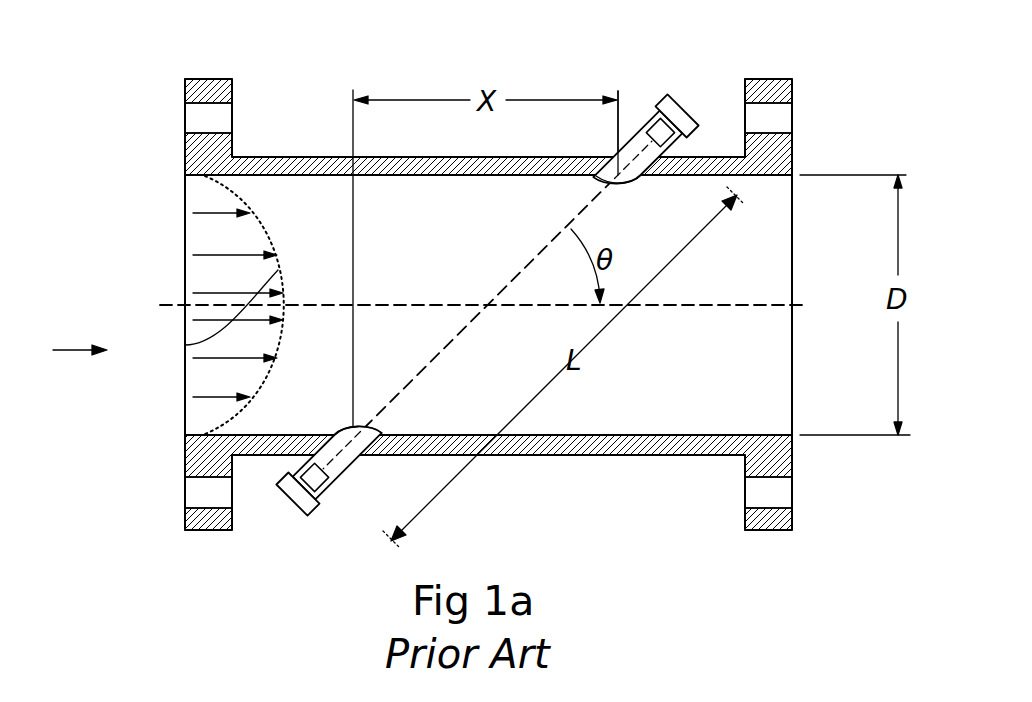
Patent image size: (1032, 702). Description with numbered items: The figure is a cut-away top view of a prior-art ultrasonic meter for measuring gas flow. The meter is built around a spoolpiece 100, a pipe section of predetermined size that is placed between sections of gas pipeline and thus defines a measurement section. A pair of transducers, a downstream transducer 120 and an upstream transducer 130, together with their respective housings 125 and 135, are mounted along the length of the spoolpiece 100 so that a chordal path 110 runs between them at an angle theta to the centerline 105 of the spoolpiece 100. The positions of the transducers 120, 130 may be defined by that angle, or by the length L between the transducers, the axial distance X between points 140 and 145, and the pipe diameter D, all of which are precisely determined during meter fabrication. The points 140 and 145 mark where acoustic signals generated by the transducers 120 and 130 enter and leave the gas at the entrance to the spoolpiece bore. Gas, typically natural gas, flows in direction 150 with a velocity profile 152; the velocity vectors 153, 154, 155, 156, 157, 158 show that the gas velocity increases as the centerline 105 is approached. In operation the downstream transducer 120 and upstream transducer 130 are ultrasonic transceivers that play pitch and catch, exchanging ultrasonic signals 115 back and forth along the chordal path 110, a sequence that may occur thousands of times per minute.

The spoolpiece 100 is at (215, 78).
The centerline 105 is at (793, 305).
The path 110 is at (548, 252).
The ultrasonic signals 115 is at (482, 312).
The downstream transducer 120 is at (686, 102).
The housing 125 is at (622, 118).
The upstream transducer 130 is at (287, 512).
The housing 135 is at (358, 468).
The point 140 is at (620, 180).
The point 145 is at (356, 431).
The flow direction 150 is at (75, 351).
The velocity profile 152 is at (268, 236).
The velocity vector 153 is at (208, 213).
The velocity vector 154 is at (210, 255).
The velocity vector 155 is at (282, 270).
The velocity vector 156 is at (185, 345).
The velocity vector 157 is at (217, 357).
The velocity vector 158 is at (217, 400).